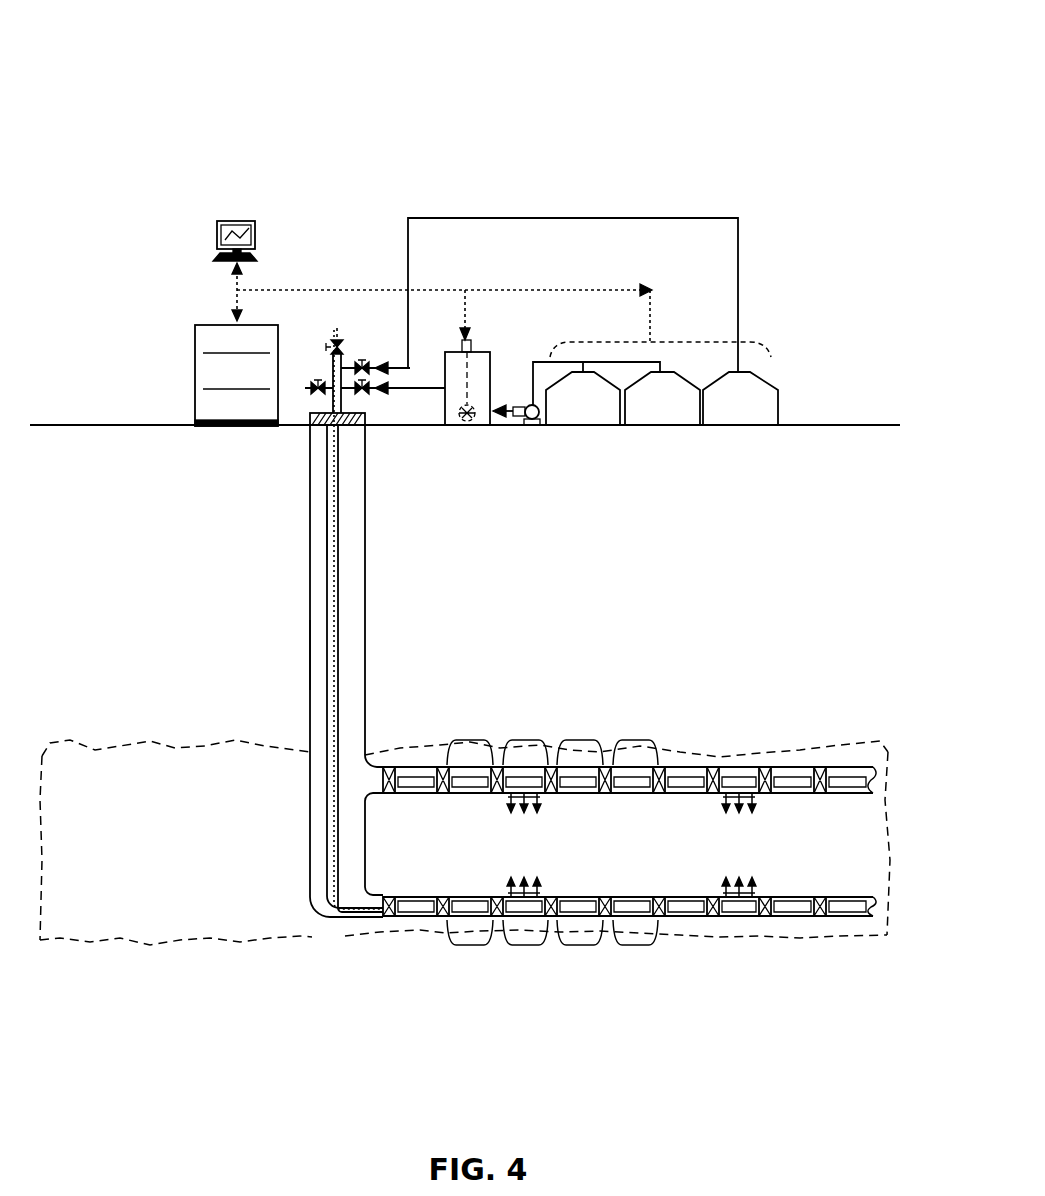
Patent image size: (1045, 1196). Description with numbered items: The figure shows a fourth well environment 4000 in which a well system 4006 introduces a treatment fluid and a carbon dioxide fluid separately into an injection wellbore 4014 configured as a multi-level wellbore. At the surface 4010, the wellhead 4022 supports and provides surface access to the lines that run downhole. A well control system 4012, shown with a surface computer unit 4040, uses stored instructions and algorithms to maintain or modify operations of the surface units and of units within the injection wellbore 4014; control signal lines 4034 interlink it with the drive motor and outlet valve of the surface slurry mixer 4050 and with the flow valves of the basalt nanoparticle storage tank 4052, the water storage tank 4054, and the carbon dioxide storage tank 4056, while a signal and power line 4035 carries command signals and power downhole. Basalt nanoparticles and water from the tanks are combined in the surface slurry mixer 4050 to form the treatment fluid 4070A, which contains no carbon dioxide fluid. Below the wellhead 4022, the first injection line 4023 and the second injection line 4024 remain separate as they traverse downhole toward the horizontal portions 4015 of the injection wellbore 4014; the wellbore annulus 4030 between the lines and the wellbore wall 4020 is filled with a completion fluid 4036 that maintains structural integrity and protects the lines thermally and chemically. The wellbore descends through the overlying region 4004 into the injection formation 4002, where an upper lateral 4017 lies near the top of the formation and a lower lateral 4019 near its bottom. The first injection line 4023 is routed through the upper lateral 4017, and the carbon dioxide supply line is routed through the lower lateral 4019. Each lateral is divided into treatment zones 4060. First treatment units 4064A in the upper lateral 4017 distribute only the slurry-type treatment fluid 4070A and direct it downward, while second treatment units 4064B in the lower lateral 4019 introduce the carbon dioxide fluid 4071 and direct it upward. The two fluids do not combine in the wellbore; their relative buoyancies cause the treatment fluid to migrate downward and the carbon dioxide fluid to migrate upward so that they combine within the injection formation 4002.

The well environment 4000 is at (123, 36).
The well system 4006 is at (205, 120).
The computer / controller 4040 is at (236, 221).
The well control system 4012 is at (213, 326).
The wellhead 4022 is at (320, 380).
The surface slurry mixer 4050 is at (483, 347).
The control signal lines 4034 is at (640, 262).
The basalt nanoparticle storage tank 4052 is at (556, 420).
The water storage tank 4054 is at (662, 418).
The CO2 storage tank 4056 is at (748, 418).
The surface 4010 is at (118, 425).
The wellbore wall 4020 is at (365, 570).
The second injection line 4024 is at (322, 470).
The completion fluid 4036 is at (350, 495).
The first injection line 4023 is at (335, 580).
The signal and power line 4035 is at (326, 530).
The injection wellbore 4014 is at (388, 603).
The wellbore annulus 4030 is at (322, 655).
The overburden formation 4004 is at (695, 619).
The injection formation 4002 is at (78, 905).
The horizontal portions 4015 is at (383, 858).
The first treatment units 4064A is at (797, 773).
The second treatment units 4064B is at (684, 920).
The treatment fluid 4070A is at (542, 812).
The CO2 fluid 4071 is at (554, 882).
The treatment zones 4060 is at (634, 945).
The upper lateral 4017 is at (830, 730).
The lower lateral 4019 is at (858, 950).